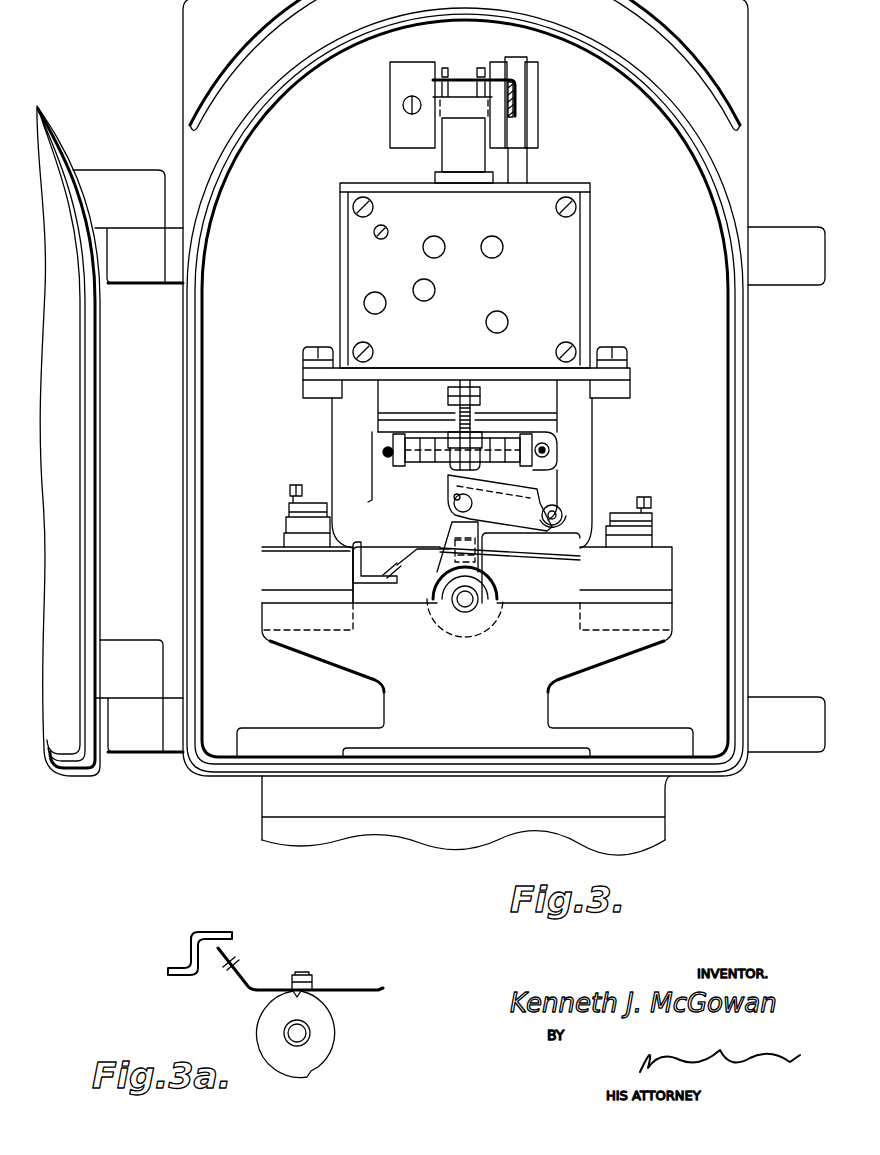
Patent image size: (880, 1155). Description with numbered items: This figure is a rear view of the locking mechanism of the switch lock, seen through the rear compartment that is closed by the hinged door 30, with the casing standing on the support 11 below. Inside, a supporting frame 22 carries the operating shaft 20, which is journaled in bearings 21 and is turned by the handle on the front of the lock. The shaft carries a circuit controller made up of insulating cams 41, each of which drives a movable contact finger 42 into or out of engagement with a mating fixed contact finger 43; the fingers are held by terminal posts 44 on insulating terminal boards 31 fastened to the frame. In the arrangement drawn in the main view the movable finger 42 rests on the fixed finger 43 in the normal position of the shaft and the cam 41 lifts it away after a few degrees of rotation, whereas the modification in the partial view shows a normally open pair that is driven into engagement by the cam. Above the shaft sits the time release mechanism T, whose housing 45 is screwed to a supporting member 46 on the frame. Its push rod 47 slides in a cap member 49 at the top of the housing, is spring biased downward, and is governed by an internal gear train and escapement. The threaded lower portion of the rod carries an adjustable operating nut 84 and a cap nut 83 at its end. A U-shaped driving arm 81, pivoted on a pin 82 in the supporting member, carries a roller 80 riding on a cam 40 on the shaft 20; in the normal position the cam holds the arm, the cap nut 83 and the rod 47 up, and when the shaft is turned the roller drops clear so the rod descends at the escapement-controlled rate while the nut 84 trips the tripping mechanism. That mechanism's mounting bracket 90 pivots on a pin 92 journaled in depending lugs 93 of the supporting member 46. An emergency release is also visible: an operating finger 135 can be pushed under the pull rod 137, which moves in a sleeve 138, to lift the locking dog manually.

In FIG. 3, the support 11 is at (652, 830).
In FIG. 3, the hinged door 30 is at (66, 772).
In FIG. 3, the time release mechanism T is at (483, 284).
In FIG. 3, the housing 45 is at (592, 187).
In FIG. 3, the operating finger 135 is at (495, 72).
In FIG. 3, the pull rod 137 is at (517, 103).
In FIG. 3, the sleeve 138 is at (522, 165).
In FIG. 3, the cap member 49 is at (458, 158).
In FIG. 3, the supporting member 46 is at (592, 448).
In FIG. 3, the push rod 47 is at (460, 410).
In FIG. 3, the operating nut 84 is at (480, 395).
In FIG. 3, the mounting bracket 90 is at (410, 440).
In FIG. 3, the pin 92 is at (384, 452).
In FIG. 3, the depending lugs 93 is at (398, 463).
In FIG. 3, the cap nut 83 is at (559, 474).
In FIG. 3, the driving arm 81 is at (498, 507).
In FIG. 3, the roller 80 is at (454, 503).
In FIG. 3, the pin 82 is at (563, 512).
In FIG. 3, the cam 40 is at (450, 524).
In FIG. 3, the insulating cam 41 is at (502, 603).
In FIG. 3A, the insulating cam 41 is at (336, 1020).
In FIG. 3, the operating shaft 20 is at (466, 604).
In FIG. 3A, the operating shaft 20 is at (303, 1037).
In FIG. 3, the bearings 21 is at (462, 603).
In FIG. 3, the movable contact finger 42 is at (396, 566).
In FIG. 3A, the movable contact finger 42 is at (257, 992).
In FIG. 3, the fixed contact finger 43 is at (370, 584).
In FIG. 3A, the fixed contact finger 43 is at (220, 932).
In FIG. 3, the insulating terminal board 31 is at (264, 562).
In FIG. 3, the terminal post 44 is at (290, 490).
In FIG. 3, the supporting frame 22 is at (326, 668).